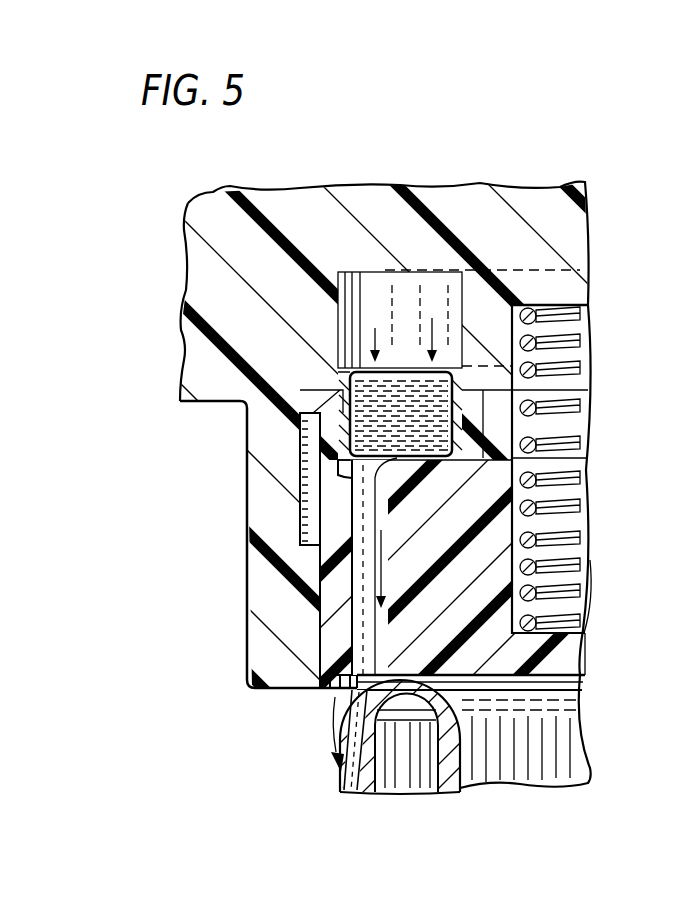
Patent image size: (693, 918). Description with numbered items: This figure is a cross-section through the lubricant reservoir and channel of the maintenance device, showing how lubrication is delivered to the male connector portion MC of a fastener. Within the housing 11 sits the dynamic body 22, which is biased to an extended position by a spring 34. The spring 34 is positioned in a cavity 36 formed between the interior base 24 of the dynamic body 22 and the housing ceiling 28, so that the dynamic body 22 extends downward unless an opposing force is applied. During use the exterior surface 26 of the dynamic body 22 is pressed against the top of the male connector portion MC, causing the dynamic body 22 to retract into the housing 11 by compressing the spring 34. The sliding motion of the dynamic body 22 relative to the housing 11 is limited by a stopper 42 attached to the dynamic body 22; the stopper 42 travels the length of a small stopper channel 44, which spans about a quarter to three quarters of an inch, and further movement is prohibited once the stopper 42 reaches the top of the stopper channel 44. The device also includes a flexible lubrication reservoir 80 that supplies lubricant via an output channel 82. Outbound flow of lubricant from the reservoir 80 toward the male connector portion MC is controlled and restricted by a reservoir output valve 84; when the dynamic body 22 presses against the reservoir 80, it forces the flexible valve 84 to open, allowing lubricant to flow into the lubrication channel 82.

The housing 11 is at (164, 325).
The flexible lubrication reservoir 80 is at (338, 372).
The output channel 82 is at (353, 620).
The reservoir output valve 84 is at (350, 481).
The stopper 42 is at (273, 407).
The stopper channel 44 is at (303, 497).
The housing ceiling 28 is at (575, 305).
The spring 34 is at (590, 340).
The cavity 36 is at (593, 597).
The interior base 24 is at (593, 630).
The dynamic body 22 is at (580, 654).
The exterior surface 26 is at (587, 713).
The male connector portion MC is at (373, 784).